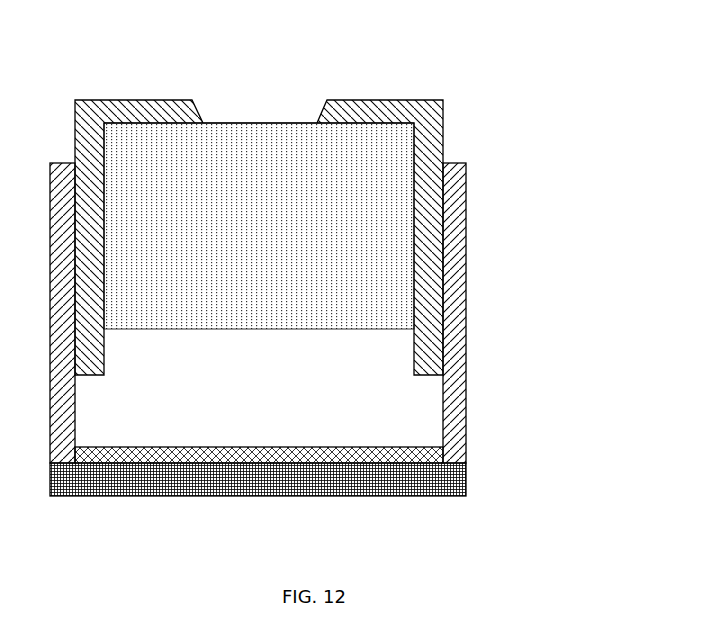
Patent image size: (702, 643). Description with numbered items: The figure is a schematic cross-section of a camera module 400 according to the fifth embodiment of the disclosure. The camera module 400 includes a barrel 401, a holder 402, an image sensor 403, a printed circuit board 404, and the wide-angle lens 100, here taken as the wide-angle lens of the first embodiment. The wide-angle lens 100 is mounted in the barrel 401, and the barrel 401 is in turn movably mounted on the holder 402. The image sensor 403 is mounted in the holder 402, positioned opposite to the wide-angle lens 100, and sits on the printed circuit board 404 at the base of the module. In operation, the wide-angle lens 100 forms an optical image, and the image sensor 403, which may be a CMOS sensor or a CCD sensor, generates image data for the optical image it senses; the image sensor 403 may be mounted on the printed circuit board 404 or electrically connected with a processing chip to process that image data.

The camera module 400 is at (110, 70).
The wide-angle lens 100 is at (260, 160).
The barrel 401 is at (444, 121).
The holder 402 is at (467, 268).
The image sensor 403 is at (310, 452).
The printed circuit board 404 is at (232, 498).